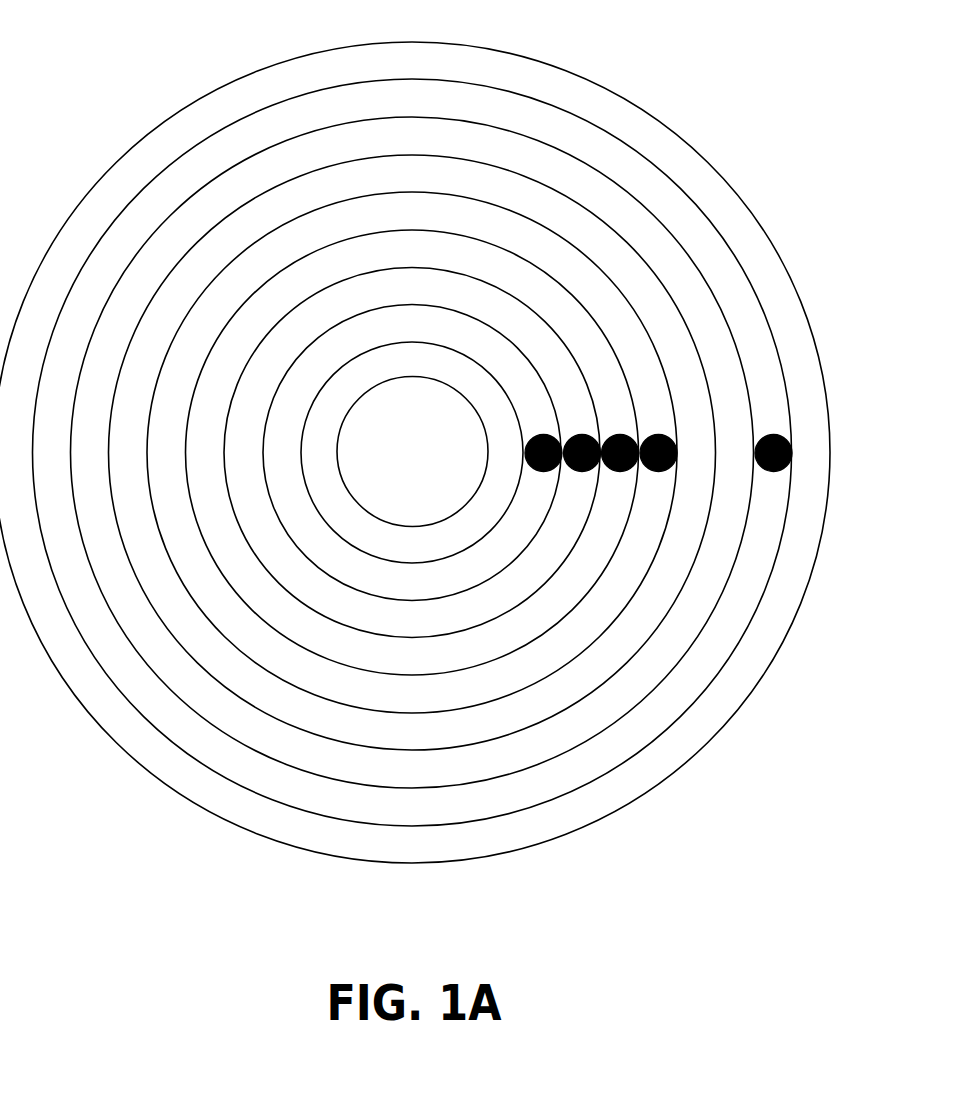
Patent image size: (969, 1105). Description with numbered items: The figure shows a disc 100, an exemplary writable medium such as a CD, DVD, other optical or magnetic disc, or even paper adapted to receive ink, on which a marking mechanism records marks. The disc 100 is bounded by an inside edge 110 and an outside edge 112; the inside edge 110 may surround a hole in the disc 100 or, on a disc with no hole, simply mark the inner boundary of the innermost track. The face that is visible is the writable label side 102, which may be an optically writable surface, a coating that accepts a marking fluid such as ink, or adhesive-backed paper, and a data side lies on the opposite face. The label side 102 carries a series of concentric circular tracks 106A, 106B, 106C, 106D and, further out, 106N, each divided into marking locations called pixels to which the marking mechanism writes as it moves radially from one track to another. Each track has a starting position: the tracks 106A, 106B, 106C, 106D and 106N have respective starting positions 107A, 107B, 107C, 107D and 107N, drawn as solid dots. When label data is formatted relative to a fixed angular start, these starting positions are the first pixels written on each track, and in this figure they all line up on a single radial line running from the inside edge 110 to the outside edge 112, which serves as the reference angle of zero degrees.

The disc 100 is at (108, 98).
The label side 102 is at (368, 60).
The inside edge 110 is at (477, 418).
The outside edge 112 is at (268, 63).
The track 106A is at (395, 598).
The track 106B is at (395, 634).
The track 106C is at (395, 672).
The track 106D is at (395, 712).
The track 106N is at (395, 823).
The starting position 107A is at (543, 435).
The starting position 107B is at (582, 435).
The starting position 107C is at (620, 435).
The starting position 107D is at (658, 435).
The starting position 107N is at (773, 435).